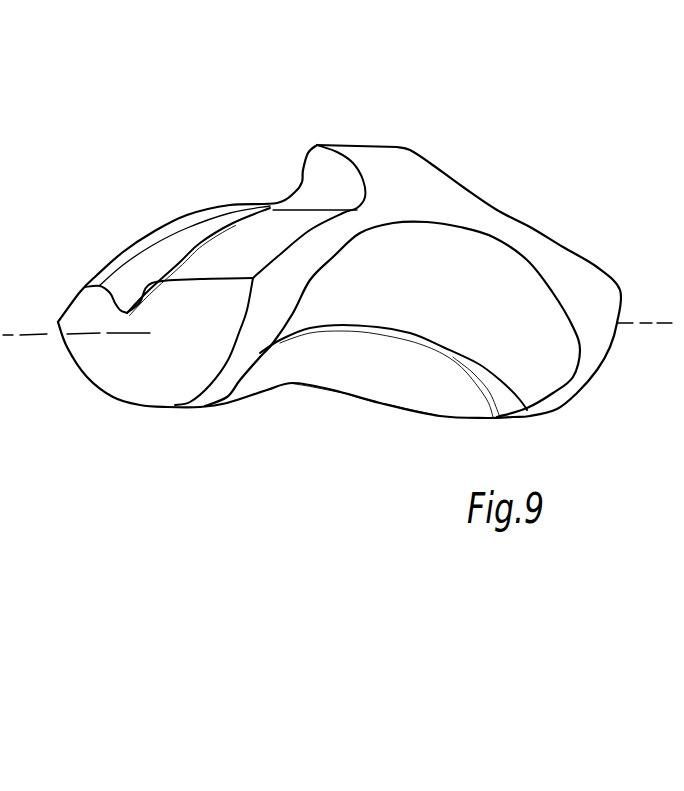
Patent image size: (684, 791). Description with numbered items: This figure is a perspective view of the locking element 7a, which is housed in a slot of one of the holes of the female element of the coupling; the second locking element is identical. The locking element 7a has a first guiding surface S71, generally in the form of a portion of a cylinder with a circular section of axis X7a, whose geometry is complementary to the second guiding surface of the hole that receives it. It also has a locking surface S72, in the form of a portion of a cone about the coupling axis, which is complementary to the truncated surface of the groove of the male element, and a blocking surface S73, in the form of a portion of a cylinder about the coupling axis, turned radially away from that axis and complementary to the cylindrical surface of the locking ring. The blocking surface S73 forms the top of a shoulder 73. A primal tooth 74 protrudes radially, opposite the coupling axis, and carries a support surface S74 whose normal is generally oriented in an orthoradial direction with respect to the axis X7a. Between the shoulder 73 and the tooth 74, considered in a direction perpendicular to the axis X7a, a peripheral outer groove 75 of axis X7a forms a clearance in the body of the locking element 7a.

The locking element 7a is at (339, 229).
The shoulder 73 is at (93, 295).
The primal tooth 74 is at (377, 163).
The peripheral outer groove 75 is at (127, 316).
The first guiding surface S71 is at (558, 401).
The locking surface S72 is at (321, 360).
The blocking surface S73 is at (127, 245).
The support surface S74 is at (303, 148).
The axis of the locking element X7a is at (342, 316).